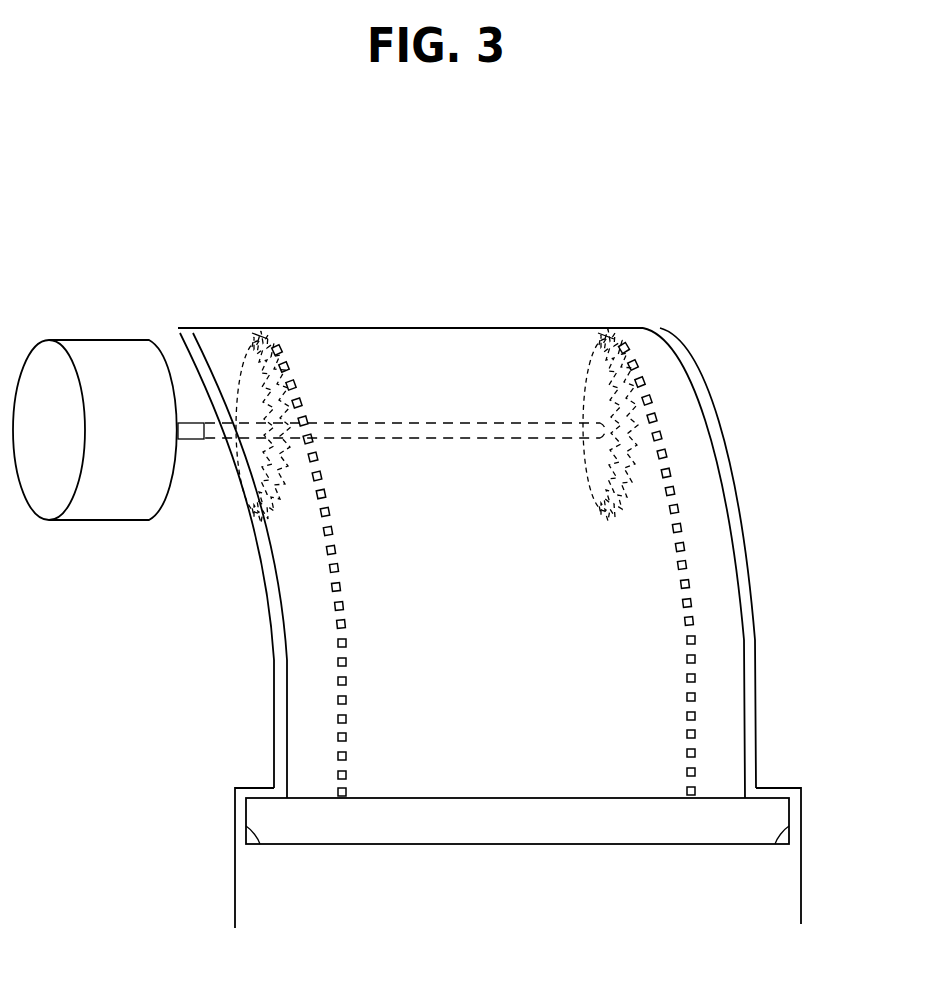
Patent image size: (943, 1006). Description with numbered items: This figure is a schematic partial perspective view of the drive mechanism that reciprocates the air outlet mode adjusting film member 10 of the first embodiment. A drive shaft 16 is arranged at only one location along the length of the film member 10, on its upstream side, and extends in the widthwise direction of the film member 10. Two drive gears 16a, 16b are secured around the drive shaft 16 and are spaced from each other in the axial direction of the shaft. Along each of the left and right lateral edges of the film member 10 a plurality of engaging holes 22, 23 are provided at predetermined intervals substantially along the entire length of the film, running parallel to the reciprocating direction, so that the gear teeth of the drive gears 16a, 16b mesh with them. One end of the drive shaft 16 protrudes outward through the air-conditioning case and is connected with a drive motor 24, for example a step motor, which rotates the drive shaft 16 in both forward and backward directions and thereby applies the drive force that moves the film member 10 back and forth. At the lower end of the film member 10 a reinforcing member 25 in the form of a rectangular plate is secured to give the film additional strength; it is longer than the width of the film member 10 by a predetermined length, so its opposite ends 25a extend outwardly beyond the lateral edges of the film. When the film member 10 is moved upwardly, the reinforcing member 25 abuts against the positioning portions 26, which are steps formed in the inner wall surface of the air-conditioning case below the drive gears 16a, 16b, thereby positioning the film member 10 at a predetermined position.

The air outlet mode adjusting film member 10 is at (494, 350).
The drive shaft 16 is at (432, 425).
The drive gear 16a is at (228, 345).
The drive gear 16b is at (581, 445).
The engaging holes 22 is at (332, 603).
The engaging holes 23 is at (689, 598).
The drive motor 24 is at (108, 365).
The reinforcing member 25 is at (521, 828).
The opposite ends of reinforcing member 25a is at (248, 827).
The positioning portions 26 is at (260, 788).